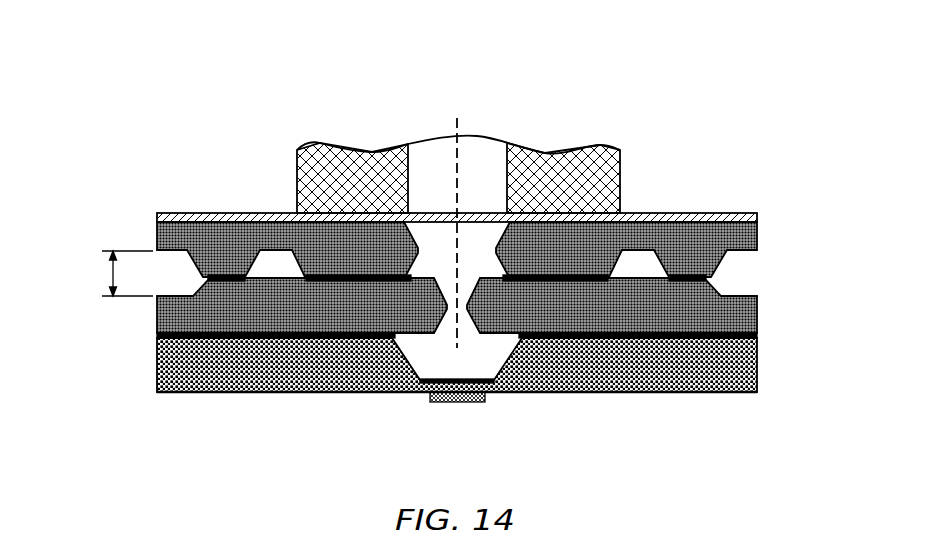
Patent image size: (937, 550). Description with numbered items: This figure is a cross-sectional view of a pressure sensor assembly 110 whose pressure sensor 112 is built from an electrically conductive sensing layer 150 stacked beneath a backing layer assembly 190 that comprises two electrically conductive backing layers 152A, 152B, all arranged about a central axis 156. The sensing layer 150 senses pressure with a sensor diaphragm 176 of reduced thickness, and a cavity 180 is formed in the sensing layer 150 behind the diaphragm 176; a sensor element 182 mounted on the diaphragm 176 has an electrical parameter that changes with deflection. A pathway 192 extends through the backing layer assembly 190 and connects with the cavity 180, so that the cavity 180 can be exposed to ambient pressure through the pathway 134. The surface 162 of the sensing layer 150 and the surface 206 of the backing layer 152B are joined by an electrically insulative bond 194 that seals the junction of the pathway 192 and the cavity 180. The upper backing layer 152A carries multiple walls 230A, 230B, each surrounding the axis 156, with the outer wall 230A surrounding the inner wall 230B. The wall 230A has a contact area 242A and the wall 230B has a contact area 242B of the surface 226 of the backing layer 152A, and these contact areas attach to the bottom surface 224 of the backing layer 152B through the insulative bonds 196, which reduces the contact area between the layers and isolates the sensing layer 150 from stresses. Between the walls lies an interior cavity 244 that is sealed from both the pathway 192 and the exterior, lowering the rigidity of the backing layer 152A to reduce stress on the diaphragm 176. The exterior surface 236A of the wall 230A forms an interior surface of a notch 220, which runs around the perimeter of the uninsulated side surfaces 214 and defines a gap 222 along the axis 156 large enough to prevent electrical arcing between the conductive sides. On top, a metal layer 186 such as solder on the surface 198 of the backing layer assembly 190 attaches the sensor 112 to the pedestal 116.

The pressure sensor assembly 110 is at (133, 76).
The pressure sensor 112 is at (763, 90).
The pedestal 116 is at (330, 157).
The pathway 134 is at (465, 153).
The sensing layer 150 is at (745, 372).
The backing layer 152A is at (758, 237).
The backing layer 152B is at (742, 323).
The axis 156 is at (455, 158).
The surface of the sensing layer 162 is at (757, 305).
The sensor diaphragm 176 is at (442, 388).
The cavity 180 is at (493, 383).
The sensor element 182 is at (453, 403).
The metal layer 186 is at (730, 212).
The backing layer assembly 190 is at (818, 231).
The pathway 192 is at (480, 205).
The bond 194 is at (280, 340).
The bond 196 is at (210, 277).
The surface of the backing layer assembly 198 is at (165, 207).
The surface of the backing layer 206 is at (172, 345).
The side surface 214 is at (157, 375).
The notch 220 is at (150, 285).
The gap 222 is at (110, 270).
The bottom surface of the backing layer 224 is at (372, 268).
The surface of the backing layer 226 is at (357, 290).
The wall 230A is at (225, 267).
The wall 230B is at (322, 268).
The exterior surface of the wall 236A is at (200, 275).
The contact area 242A is at (225, 290).
The contact area 242B is at (327, 290).
The interior cavity 244 is at (277, 267).